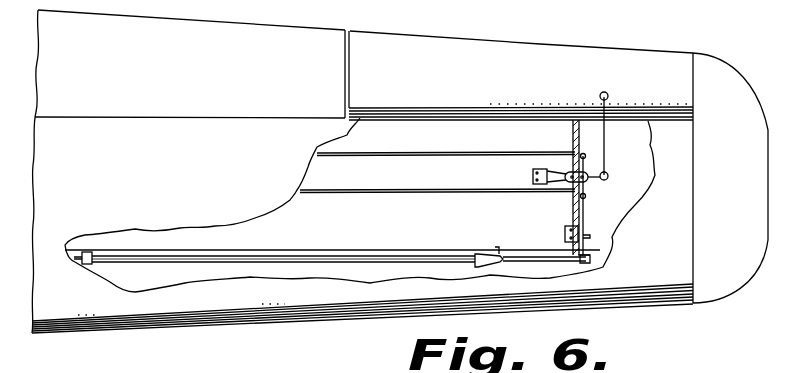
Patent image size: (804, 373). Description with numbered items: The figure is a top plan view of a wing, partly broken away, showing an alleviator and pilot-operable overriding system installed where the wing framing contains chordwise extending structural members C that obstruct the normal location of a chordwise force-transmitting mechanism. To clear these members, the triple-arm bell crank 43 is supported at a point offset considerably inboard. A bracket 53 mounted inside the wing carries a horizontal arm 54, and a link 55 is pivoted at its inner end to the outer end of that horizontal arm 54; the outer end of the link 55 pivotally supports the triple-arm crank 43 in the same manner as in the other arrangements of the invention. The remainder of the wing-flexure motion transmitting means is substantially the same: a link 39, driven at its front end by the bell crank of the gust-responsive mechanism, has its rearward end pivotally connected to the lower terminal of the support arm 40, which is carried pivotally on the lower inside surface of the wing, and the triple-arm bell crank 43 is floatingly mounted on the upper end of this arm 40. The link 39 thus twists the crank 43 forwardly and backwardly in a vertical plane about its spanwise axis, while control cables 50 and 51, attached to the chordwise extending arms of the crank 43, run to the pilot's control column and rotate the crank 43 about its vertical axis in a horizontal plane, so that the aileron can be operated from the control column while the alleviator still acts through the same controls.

The link 39 is at (585, 221).
The arm 40 is at (590, 175).
The triple-arm bell crank 43 is at (587, 183).
The control cable 50 is at (340, 197).
The control cable 51 is at (364, 157).
The bracket 53 is at (533, 176).
The horizontal arm 54 is at (549, 168).
The link 55 is at (572, 181).
The chordwise extending structural members C is at (573, 215).